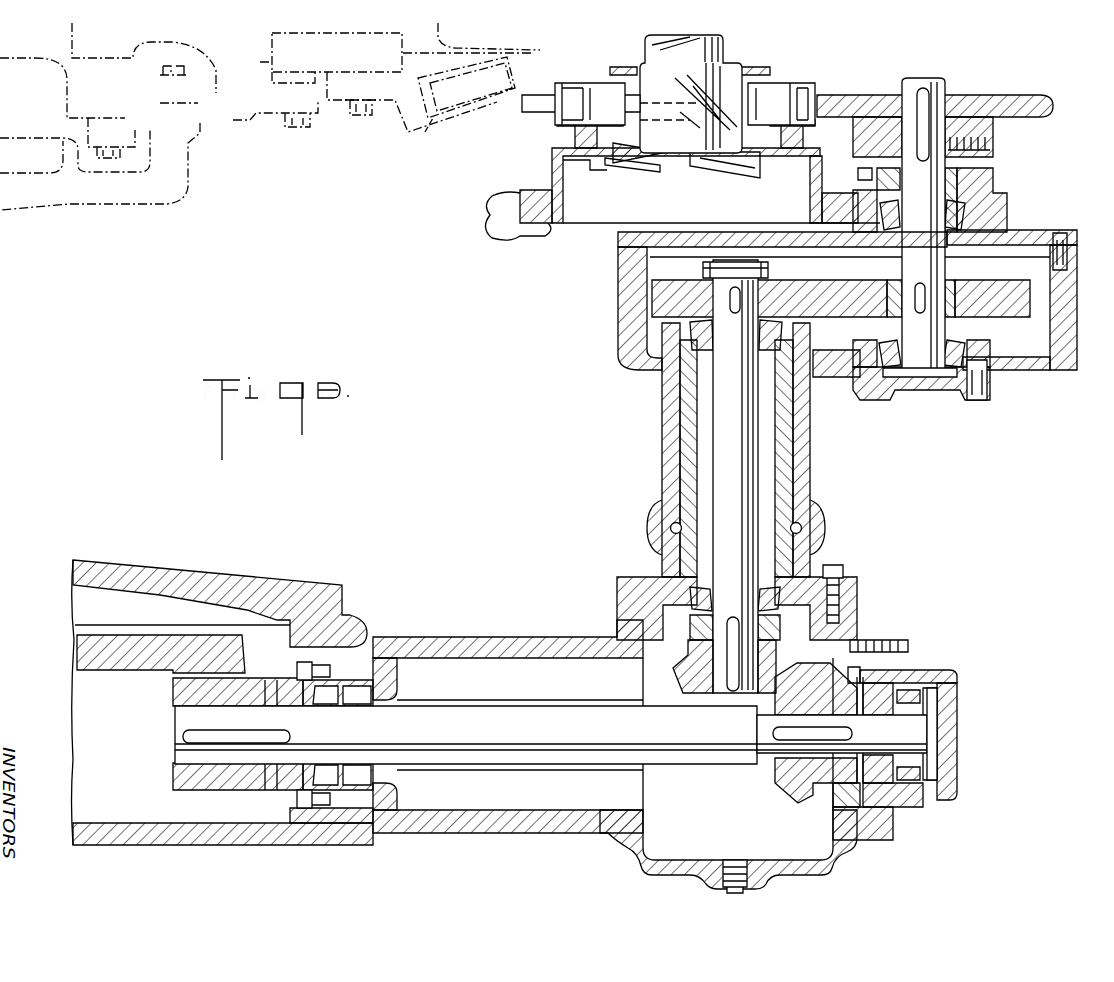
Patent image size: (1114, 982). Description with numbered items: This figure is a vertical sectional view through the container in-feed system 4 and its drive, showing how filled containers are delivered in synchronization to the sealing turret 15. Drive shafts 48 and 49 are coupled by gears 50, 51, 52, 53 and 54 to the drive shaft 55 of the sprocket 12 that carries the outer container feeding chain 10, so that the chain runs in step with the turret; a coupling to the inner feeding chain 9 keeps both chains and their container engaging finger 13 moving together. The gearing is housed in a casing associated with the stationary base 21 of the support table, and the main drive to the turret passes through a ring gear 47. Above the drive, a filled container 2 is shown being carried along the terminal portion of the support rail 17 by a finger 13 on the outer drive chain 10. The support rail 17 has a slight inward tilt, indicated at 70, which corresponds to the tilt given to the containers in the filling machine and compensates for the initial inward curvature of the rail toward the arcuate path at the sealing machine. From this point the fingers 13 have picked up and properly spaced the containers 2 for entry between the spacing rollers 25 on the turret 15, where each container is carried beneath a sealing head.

The container 2 is at (733, 68).
The in-feed system 4 is at (555, 133).
The container feeding chain 9 is at (575, 95).
The container feeding chain 10 is at (810, 83).
The end sprocket 12 is at (1003, 96).
The container engaging finger 13 is at (683, 121).
The sealing turret 15 is at (343, 148).
The support rail 17 is at (690, 164).
The stationary base 21 is at (180, 575).
The container spacing roller 25 is at (452, 107).
The ring gear 47 is at (188, 675).
The drive shaft 48 is at (527, 752).
The drive shaft 49 is at (730, 481).
The gear 50 is at (219, 795).
The gear 51 is at (790, 775).
The gear 52 is at (688, 673).
The gear 53 is at (655, 300).
The gear 54 is at (1000, 318).
The sprocket drive shaft 55 is at (930, 194).
The initial tilt of support rail 70 is at (750, 170).